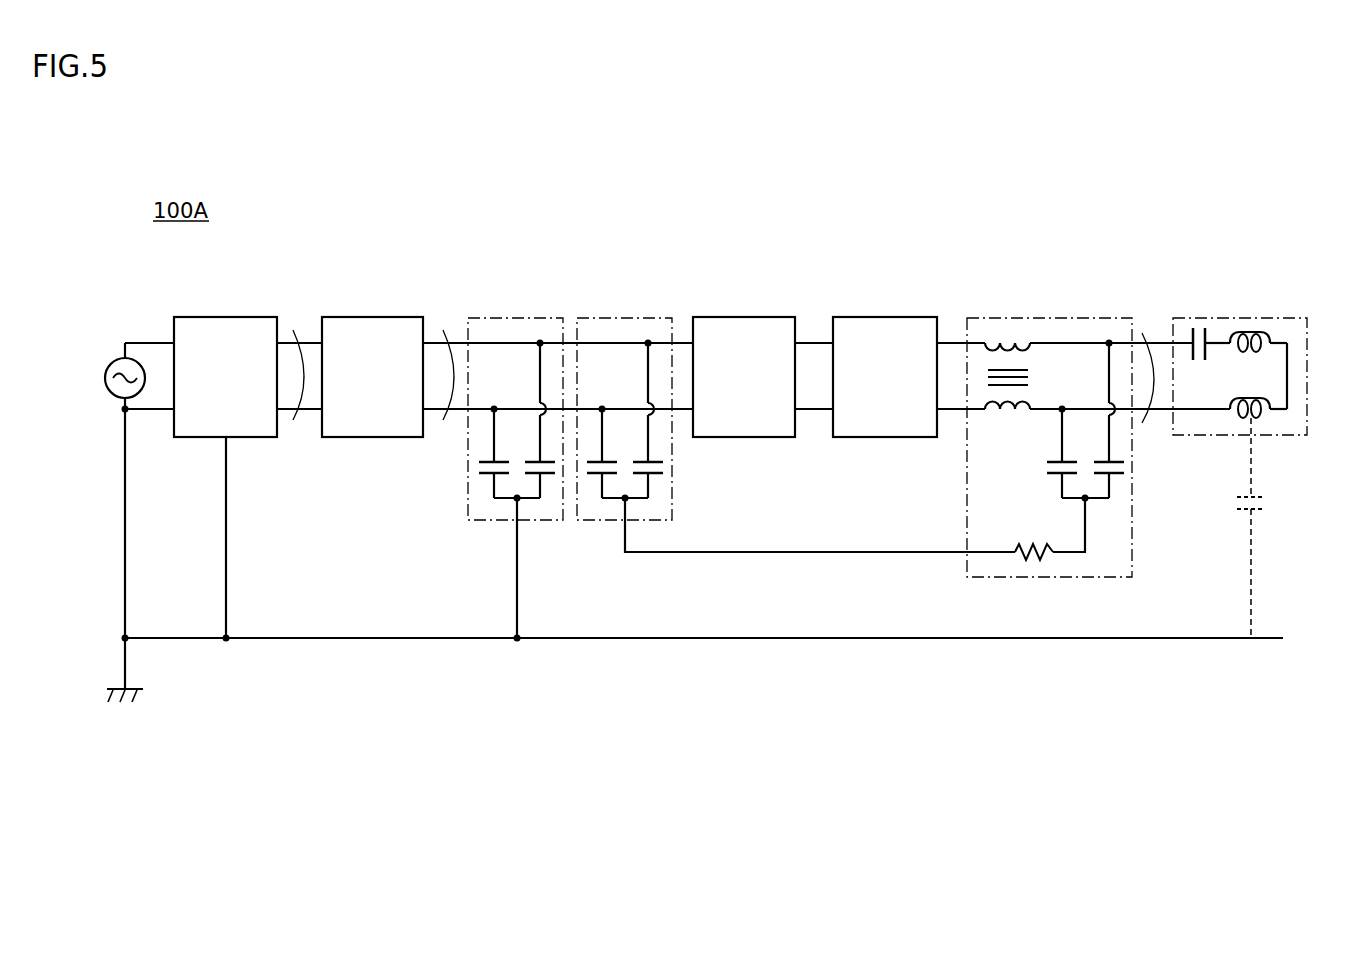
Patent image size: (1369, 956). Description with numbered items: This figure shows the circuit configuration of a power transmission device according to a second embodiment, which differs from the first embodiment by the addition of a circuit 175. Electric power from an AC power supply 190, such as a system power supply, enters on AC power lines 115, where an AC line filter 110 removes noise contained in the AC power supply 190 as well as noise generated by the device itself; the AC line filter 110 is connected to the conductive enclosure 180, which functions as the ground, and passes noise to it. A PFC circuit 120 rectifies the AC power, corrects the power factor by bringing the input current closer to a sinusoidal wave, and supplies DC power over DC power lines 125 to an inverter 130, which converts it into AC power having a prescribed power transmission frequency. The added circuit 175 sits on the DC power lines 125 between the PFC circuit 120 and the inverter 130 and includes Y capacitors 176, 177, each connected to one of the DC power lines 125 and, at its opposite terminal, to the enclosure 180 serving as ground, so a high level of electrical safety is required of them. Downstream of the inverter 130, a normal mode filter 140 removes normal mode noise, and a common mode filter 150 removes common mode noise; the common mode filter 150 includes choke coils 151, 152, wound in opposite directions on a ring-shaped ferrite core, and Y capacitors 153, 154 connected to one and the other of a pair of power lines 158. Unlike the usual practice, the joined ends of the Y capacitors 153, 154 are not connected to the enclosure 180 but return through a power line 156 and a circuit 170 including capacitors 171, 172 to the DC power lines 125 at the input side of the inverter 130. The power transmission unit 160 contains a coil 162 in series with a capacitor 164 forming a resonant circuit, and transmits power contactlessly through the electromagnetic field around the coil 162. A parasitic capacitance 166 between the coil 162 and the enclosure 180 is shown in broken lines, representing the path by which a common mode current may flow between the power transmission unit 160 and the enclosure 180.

The AC line filter 110 is at (229, 317).
The AC power lines 115 is at (296, 330).
The power factor correction (PFC) circuit 120 is at (373, 317).
The DC power lines 125 is at (443, 330).
The inverter 130 is at (745, 317).
The normal mode filter 140 is at (885, 317).
The common mode filter 150 is at (1082, 318).
The choke coil 151 is at (1006, 340).
The choke coil 152 is at (1010, 412).
The Y capacitor 153 is at (1052, 477).
The Y capacitor 154 is at (1120, 477).
The power line 156 is at (827, 553).
The pair of power lines 158 is at (1144, 332).
The power transmission unit 160 is at (1292, 318).
The coil 162 is at (1249, 330).
The capacitor 164 is at (1199, 328).
The parasitic capacitance 166 is at (1259, 513).
The circuit 170 is at (622, 318).
The capacitor 171 is at (589, 476).
The capacitor 172 is at (664, 456).
The circuit 175 is at (517, 318).
The Y capacitor 176 is at (479, 456).
The Y capacitor 177 is at (554, 476).
The enclosure 180 is at (678, 640).
The AC power supply 190 is at (111, 365).